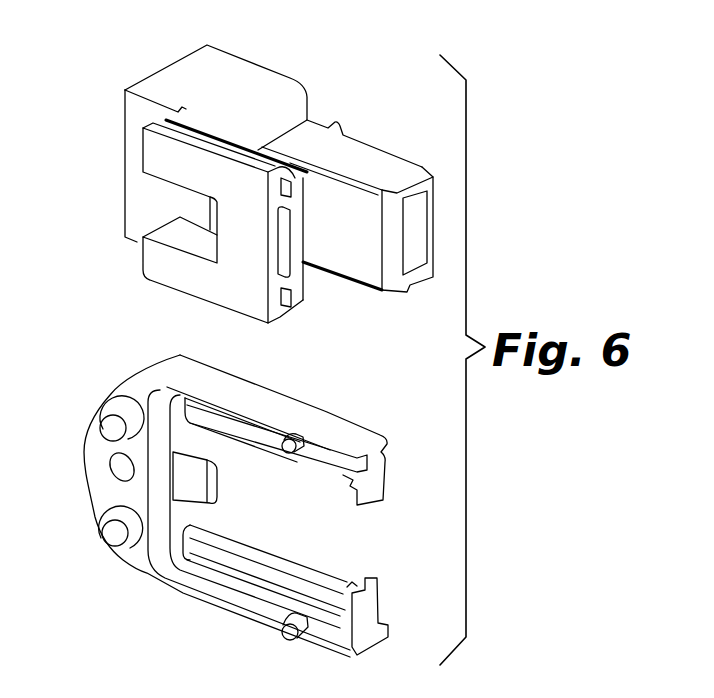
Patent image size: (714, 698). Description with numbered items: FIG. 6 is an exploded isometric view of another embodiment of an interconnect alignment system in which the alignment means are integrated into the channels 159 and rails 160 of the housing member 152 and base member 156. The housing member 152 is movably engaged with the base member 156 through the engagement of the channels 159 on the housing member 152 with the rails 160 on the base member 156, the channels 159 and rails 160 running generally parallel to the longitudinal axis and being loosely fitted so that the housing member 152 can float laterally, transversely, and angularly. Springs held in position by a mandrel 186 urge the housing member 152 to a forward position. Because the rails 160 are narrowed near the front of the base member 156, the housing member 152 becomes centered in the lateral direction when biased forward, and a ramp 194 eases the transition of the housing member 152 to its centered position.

The housing member 152 is at (242, 76).
The channels 159 is at (293, 187).
The base member 156 is at (342, 425).
The mandrel 186 is at (187, 478).
The rails 160 is at (255, 450).
The ramp 194 is at (351, 586).